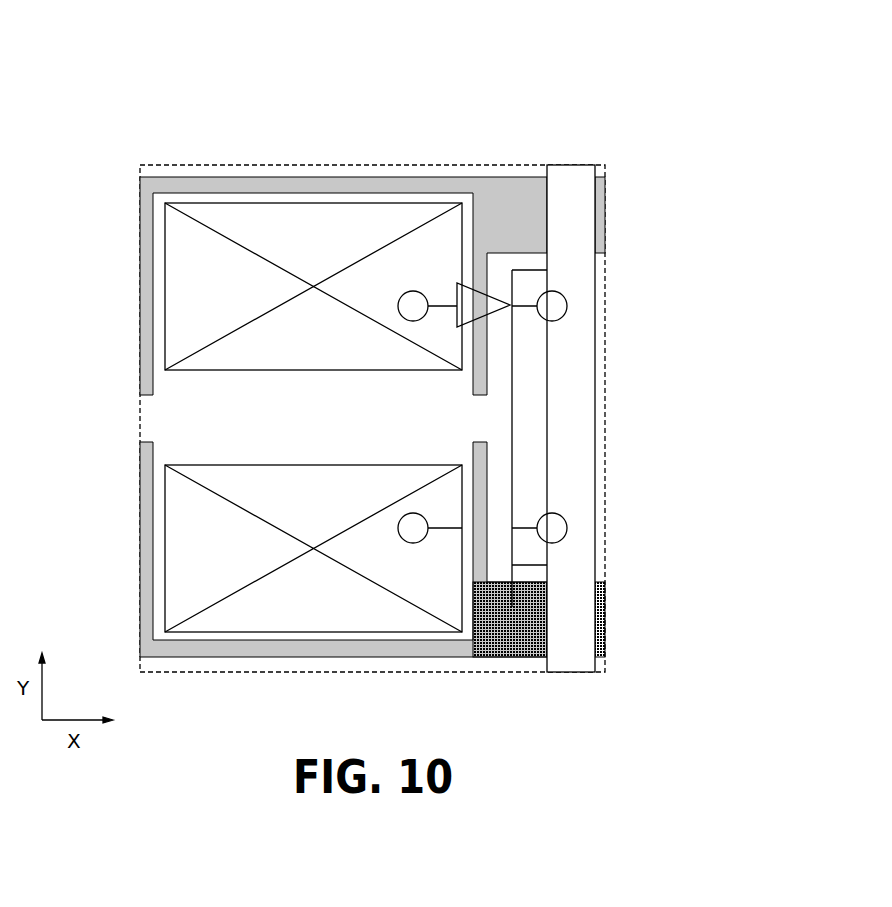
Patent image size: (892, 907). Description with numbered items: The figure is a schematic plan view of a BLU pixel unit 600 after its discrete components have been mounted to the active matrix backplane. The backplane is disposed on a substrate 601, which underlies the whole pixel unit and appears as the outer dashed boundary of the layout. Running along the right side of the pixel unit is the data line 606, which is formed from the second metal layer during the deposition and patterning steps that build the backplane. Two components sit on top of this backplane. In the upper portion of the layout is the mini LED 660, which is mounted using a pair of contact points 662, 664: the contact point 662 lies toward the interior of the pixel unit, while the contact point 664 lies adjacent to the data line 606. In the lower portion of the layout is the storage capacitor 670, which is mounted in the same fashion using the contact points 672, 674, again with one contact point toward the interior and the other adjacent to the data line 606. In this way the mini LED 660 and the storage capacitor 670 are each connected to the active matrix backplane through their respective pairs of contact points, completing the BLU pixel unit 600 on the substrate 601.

The BLU pixel unit 600 is at (442, 374).
The substrate 601 is at (438, 175).
The data line 606 is at (567, 182).
The mini LED 660 is at (418, 285).
The contact point 662 is at (412, 302).
The contact point 664 is at (556, 303).
The storage capacitor 670 is at (418, 512).
The contact point 672 is at (412, 525).
The contact point 674 is at (556, 523).